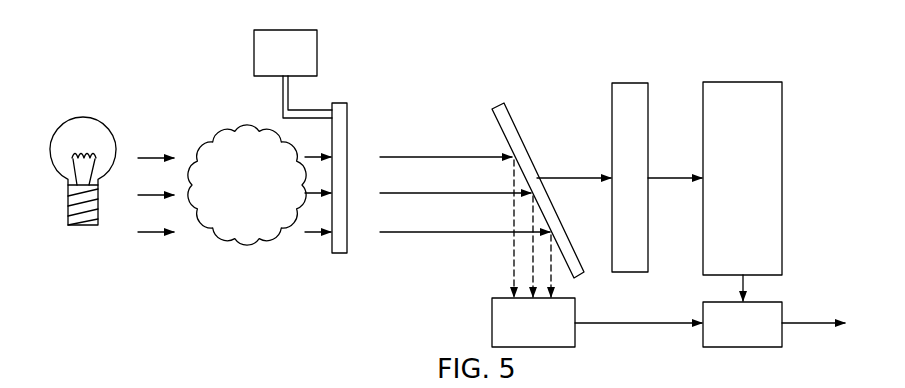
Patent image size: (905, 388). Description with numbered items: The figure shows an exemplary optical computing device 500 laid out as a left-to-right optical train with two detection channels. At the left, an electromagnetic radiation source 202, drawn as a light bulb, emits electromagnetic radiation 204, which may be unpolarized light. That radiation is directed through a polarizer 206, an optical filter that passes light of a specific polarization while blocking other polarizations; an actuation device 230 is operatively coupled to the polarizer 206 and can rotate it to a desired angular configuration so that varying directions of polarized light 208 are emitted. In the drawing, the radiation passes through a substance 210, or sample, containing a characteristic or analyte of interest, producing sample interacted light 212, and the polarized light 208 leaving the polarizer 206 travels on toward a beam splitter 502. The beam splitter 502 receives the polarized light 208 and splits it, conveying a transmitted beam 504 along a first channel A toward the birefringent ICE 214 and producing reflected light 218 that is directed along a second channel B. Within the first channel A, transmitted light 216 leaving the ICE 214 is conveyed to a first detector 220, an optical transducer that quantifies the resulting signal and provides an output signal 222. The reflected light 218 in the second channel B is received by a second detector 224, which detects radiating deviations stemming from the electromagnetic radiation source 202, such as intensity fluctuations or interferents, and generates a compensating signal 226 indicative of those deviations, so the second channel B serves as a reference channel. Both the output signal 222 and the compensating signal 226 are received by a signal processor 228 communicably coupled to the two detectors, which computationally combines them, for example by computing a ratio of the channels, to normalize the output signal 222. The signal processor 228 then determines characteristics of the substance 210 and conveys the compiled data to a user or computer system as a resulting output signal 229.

The electromagnetic radiation source 202 is at (60, 127).
The electromagnetic radiation 204 is at (155, 233).
The polarizer 206 is at (346, 106).
The polarized light 208 is at (403, 234).
The substance 210 is at (230, 202).
The sample interacted light 212 is at (308, 234).
The birefringent ICE 214 is at (632, 88).
The transmitted light 216 is at (672, 178).
The reflected light 218 is at (513, 248).
The first detector 220 is at (728, 188).
The output signal 222 is at (741, 286).
The second detector 224 is at (518, 333).
The compensating signal 226 is at (615, 323).
The signal processor 228 is at (728, 333).
The resulting output signal 229 is at (815, 323).
The actuation device 230 is at (270, 65).
The optical computing device 500 is at (566, 49).
The beam splitter 502 is at (502, 108).
The transmitted beam 504 is at (568, 178).
The first channel A is at (550, 110).
The second channel B is at (490, 277).